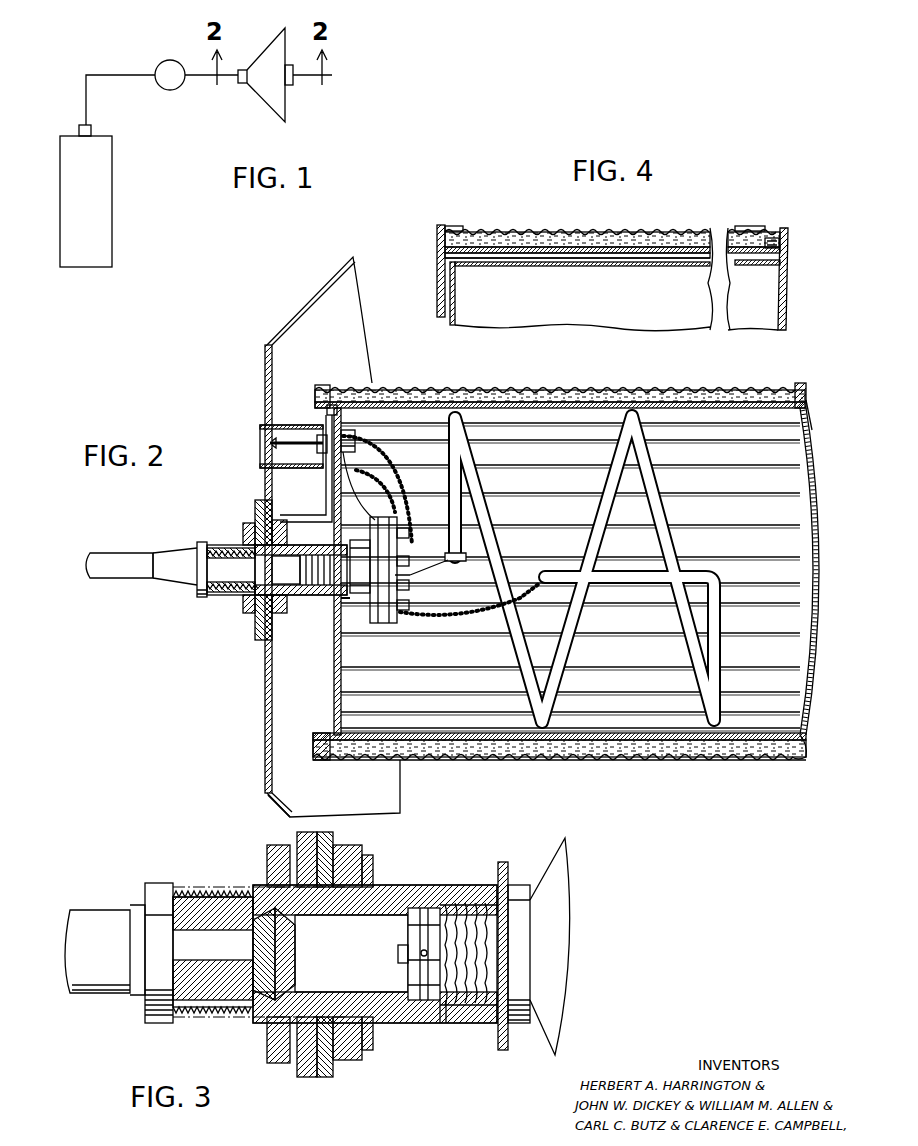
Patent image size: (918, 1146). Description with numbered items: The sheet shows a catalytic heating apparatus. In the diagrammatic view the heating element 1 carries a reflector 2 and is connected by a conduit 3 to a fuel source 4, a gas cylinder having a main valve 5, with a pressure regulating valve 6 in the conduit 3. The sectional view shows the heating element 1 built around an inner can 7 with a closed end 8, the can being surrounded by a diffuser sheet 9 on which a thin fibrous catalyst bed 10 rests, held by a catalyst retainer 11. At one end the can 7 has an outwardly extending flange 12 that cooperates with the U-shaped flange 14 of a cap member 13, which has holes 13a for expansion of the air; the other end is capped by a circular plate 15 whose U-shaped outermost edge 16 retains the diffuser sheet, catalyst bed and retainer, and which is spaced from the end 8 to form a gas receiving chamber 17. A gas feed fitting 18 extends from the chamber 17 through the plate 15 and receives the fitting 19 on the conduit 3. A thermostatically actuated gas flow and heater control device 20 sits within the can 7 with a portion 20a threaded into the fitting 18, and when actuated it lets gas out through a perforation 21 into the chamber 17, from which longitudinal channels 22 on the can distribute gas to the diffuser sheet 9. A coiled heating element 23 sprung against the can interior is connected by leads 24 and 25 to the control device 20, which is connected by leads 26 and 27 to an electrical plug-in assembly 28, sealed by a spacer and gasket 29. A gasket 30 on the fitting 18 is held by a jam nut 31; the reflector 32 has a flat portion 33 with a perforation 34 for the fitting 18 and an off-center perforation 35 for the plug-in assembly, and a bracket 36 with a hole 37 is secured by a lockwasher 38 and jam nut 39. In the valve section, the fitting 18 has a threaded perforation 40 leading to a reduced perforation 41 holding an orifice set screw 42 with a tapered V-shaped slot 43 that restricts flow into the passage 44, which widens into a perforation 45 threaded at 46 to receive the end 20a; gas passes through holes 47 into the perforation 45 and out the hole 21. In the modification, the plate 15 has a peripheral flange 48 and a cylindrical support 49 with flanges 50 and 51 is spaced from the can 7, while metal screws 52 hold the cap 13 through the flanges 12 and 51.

In FIG. 1, the heating element 1 is at (301, 78).
In FIG. 2, the heating element 1 is at (530, 393).
In FIG. 1, the reflector 2 is at (260, 99).
In FIG. 1, the conduit 3 is at (99, 75).
In FIG. 2, the conduit 3 is at (106, 576).
In FIG. 1, the fuel source 4 is at (110, 193).
In FIG. 1, the main valve 5 is at (90, 129).
In FIG. 1, the pressure regulating valve 6 is at (163, 88).
In FIG. 4, the inner can 7 is at (542, 315).
In FIG. 2, the inner can 7 is at (565, 415).
In FIG. 2, the closed end 8 is at (338, 506).
In FIG. 4, the diffuser sheet 9 is at (590, 256).
In FIG. 2, the diffuser sheet 9 is at (544, 750).
In FIG. 4, the catalyst bed 10 is at (635, 252).
In FIG. 2, the catalyst bed 10 is at (579, 750).
In FIG. 4, the catalyst retainer 11 is at (678, 244).
In FIG. 2, the catalyst retainer 11 is at (631, 750).
In FIG. 4, the outwardly extending flange 12 is at (785, 258).
In FIG. 2, the outwardly extending flange 12 is at (799, 742).
In FIG. 4, the cap member 13 is at (786, 282).
In FIG. 2, the cap member 13 is at (810, 448).
In FIG. 3, the cap member 13 is at (80, 988).
In FIG. 2, the holes 13a is at (809, 430).
In FIG. 2, the circumferentially extending flange 14 is at (801, 383).
In FIG. 4, the circular plate 15 is at (438, 283).
In FIG. 2, the circular plate 15 is at (326, 718).
In FIG. 2, the outermost edge 16 is at (320, 385).
In FIG. 2, the gas receiving chamber 17 is at (312, 518).
In FIG. 2, the gas feed fitting 18 is at (226, 598).
In FIG. 2, the fitting 19 is at (196, 543).
In FIG. 3, the fitting 19 is at (160, 890).
In FIG. 2, the gas flow and heater control device 20 is at (365, 614).
In FIG. 2, the portion of control device 20a is at (343, 600).
In FIG. 2, the perforation 21 is at (317, 600).
In FIG. 3, the perforation 21 is at (436, 1022).
In FIG. 2, the longitudinal channels 22 is at (578, 468).
In FIG. 2, the heating element 23 is at (604, 550).
In FIG. 2, the lead 24 is at (428, 578).
In FIG. 2, the lead 25 is at (462, 616).
In FIG. 2, the lead 26 is at (364, 498).
In FIG. 2, the lead 27 is at (388, 463).
In FIG. 2, the electrical plug-in assembly 28 is at (270, 443).
In FIG. 2, the spacer and gasket 29 is at (331, 432).
In FIG. 2, the gasket 30 is at (280, 518).
In FIG. 3, the gasket 30 is at (364, 1058).
In FIG. 2, the jam nut 31 is at (288, 615).
In FIG. 3, the jam nut 31 is at (345, 1062).
In FIG. 2, the reflector 32 is at (308, 306).
In FIG. 2, the flat portion 33 is at (266, 770).
In FIG. 3, the flat portion 33 is at (322, 840).
In FIG. 2, the perforation 34 is at (262, 630).
In FIG. 2, the off-center perforation 35 is at (267, 422).
In FIG. 2, the bracket 36 is at (258, 502).
In FIG. 3, the bracket 36 is at (296, 841).
In FIG. 2, the hole 37 is at (282, 570).
In FIG. 2, the lockwasher 38 is at (245, 609).
In FIG. 3, the lockwasher 38 is at (289, 1076).
In FIG. 2, the jam nut 39 is at (243, 531).
In FIG. 3, the jam nut 39 is at (266, 1056).
In FIG. 3, the internally threaded perforation 40 is at (205, 905).
In FIG. 3, the perforation of reduced diameter 41 is at (270, 985).
In FIG. 3, the orifice set screw 42 is at (313, 929).
In FIG. 3, the tapered V-shaped slot 43 is at (306, 960).
In FIG. 3, the passage 44 is at (385, 900).
In FIG. 3, the perforation 45 is at (428, 915).
In FIG. 3, the internally threaded part 46 is at (480, 900).
In FIG. 3, the holes 47 is at (425, 955).
In FIG. 4, the peripheral flange 48 is at (463, 228).
In FIG. 4, the cylindrical support 49 is at (535, 248).
In FIG. 4, the flange 50 is at (437, 247).
In FIG. 4, the flange 51 is at (770, 222).
In FIG. 4, the metal screws 52 is at (780, 240).